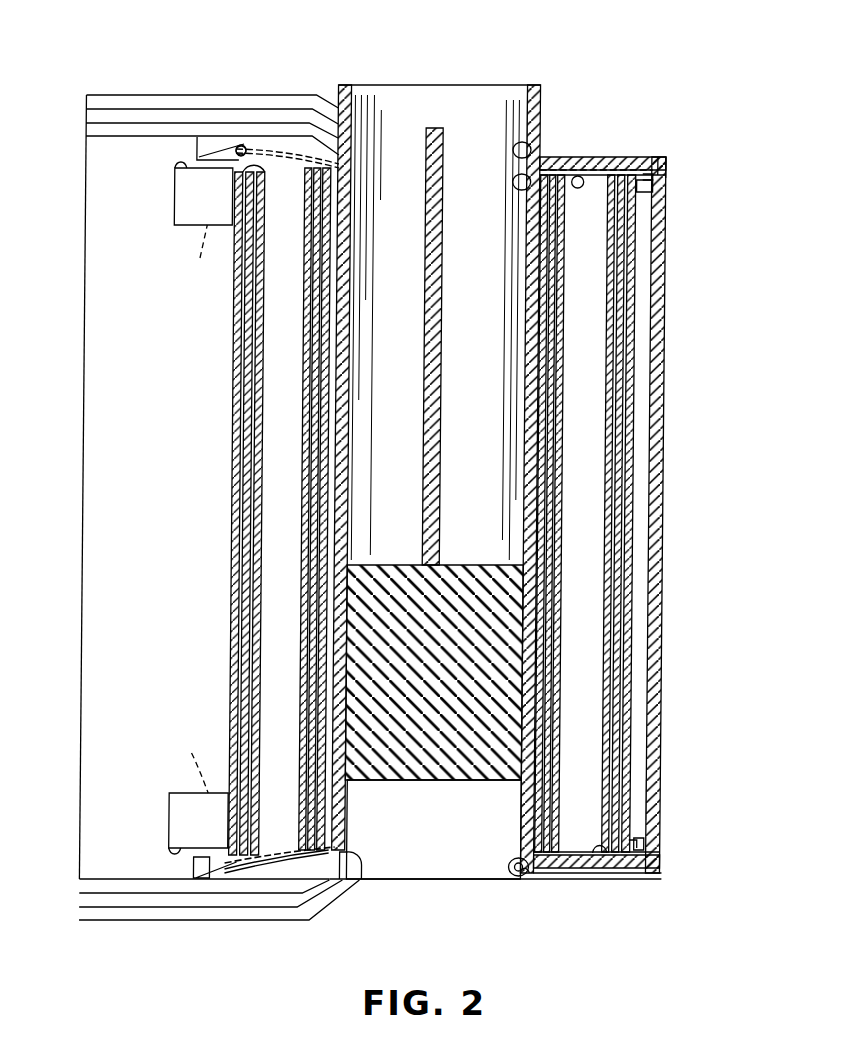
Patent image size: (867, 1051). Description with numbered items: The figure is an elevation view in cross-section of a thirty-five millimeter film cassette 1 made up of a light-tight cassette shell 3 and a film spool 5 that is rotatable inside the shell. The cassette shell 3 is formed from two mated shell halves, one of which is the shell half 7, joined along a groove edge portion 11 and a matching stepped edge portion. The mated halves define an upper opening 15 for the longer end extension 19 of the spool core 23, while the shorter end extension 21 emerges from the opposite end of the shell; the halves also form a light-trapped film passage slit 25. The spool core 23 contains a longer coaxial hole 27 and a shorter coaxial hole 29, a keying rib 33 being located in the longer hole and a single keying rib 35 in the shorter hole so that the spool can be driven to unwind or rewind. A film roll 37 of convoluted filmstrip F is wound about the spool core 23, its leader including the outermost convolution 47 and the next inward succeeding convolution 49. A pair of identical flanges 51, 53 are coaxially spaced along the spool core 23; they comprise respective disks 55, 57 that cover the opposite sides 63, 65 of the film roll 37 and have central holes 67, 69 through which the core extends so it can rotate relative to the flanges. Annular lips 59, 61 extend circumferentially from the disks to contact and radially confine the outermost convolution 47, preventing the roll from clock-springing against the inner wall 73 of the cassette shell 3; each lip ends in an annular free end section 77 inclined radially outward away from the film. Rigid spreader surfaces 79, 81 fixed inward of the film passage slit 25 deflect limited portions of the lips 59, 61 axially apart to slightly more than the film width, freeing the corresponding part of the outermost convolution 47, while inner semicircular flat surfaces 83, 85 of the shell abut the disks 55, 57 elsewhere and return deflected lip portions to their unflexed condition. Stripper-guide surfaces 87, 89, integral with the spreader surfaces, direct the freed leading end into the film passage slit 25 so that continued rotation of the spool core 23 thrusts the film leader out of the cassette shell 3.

The film cassette 1 is at (172, 83).
The cassette shell 3 is at (665, 805).
The film spool 5 is at (417, 511).
The shell half 7 is at (219, 94).
The groove edge portion 11 is at (97, 113).
The upper opening 15 is at (527, 142).
The longer end extension 19 is at (540, 93).
The shorter end extension 21 is at (531, 882).
The spool core 23 is at (476, 565).
The film passage slit 25 is at (115, 290).
The longer coaxial hole 27 is at (404, 102).
The shorter coaxial hole 29 is at (408, 880).
The keying rib 33 is at (444, 160).
The keying rib 35 is at (465, 782).
The film roll 37 is at (232, 330).
The outermost convolution 47 is at (236, 380).
The next inward succeeding convolution 49 is at (234, 493).
The flange 51 is at (245, 152).
The flange 53 is at (626, 873).
The disk 55 is at (283, 155).
The disk 57 is at (286, 868).
The annular lip 59 is at (197, 151).
The annular lip 61 is at (198, 867).
The side of film roll 63 is at (252, 173).
The side of film roll 65 is at (248, 851).
The central hole 67 is at (343, 163).
The central hole 69 is at (357, 880).
The inner wall 73 is at (645, 500).
The annular free end section 77 is at (216, 170).
The spreader surface 79 is at (176, 168).
The spreader surface 81 is at (168, 853).
The inner semicircular flat surface 83 is at (597, 157).
The inner semicircular flat surface 85 is at (589, 872).
The stripper-guide surface 87 is at (193, 253).
The stripper-guide surface 89 is at (194, 763).
The filmstrip F is at (292, 566).